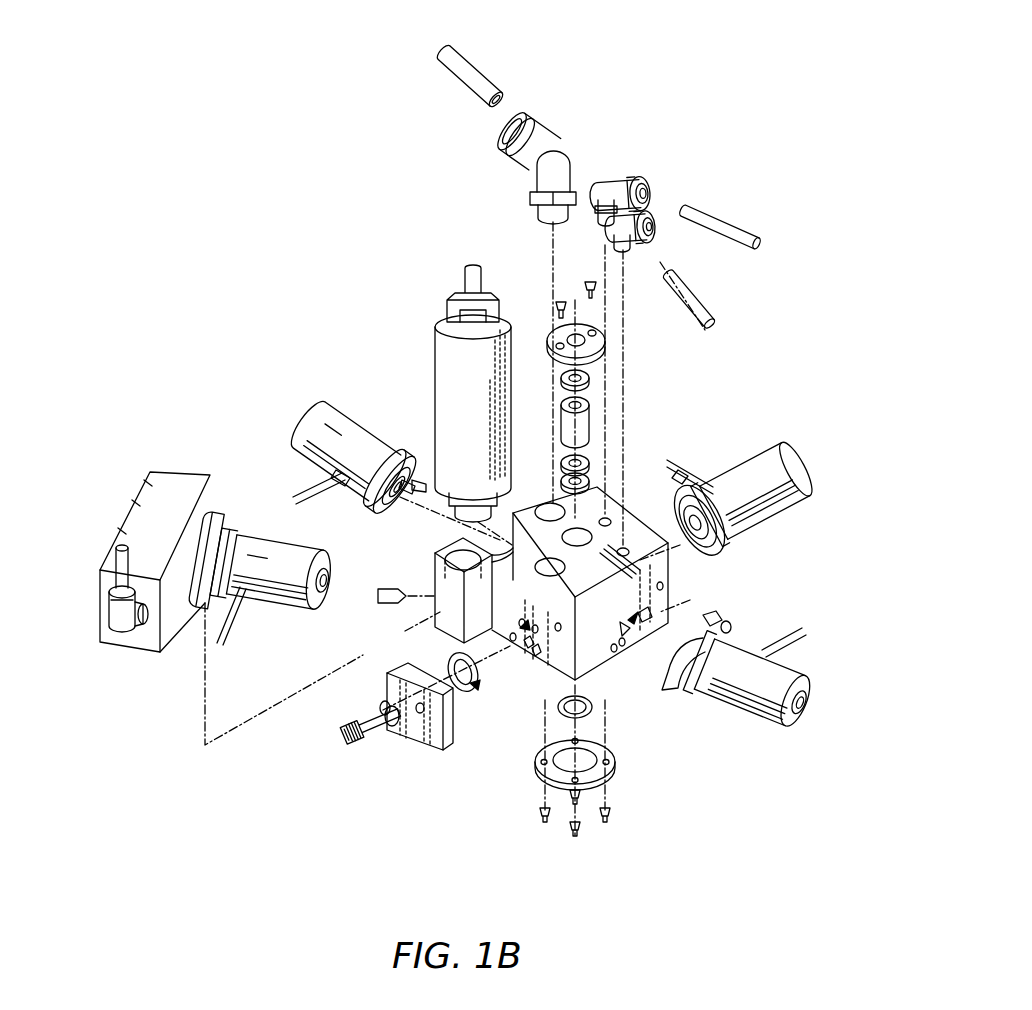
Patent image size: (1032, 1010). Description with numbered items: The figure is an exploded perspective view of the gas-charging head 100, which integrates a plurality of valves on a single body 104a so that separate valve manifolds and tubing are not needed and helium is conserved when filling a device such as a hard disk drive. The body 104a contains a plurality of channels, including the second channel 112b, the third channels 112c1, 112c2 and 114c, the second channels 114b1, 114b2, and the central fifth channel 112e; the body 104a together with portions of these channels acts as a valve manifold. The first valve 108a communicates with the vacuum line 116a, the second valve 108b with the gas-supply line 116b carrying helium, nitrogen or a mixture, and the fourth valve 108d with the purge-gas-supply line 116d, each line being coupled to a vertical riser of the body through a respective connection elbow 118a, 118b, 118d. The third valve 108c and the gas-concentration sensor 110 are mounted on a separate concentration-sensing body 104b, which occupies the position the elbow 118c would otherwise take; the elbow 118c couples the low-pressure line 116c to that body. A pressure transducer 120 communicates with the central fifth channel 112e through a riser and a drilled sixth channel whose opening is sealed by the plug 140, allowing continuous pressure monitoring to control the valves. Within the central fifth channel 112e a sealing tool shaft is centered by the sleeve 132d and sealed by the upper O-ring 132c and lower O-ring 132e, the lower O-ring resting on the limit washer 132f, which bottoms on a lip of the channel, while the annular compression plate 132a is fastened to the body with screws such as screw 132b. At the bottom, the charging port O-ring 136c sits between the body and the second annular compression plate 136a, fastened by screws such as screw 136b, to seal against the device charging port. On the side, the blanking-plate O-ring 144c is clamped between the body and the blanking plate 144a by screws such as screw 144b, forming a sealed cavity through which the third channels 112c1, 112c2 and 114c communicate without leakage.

The gas-charging head 100 is at (644, 46).
The body 104a is at (692, 556).
The concentration-sensing body 104b is at (165, 468).
The first valve 108a is at (317, 398).
The second valve 108b is at (787, 750).
The third valve 108c is at (260, 524).
The fourth valve 108d is at (787, 443).
The gas-concentration sensor 110 is at (156, 466).
The second channel 112b is at (716, 622).
The third channel 112c1 is at (525, 652).
The third channel 112c2 is at (512, 620).
The central fifth channel 112e is at (664, 584).
The second channel 114b1 is at (640, 655).
The second channel 114b2 is at (596, 710).
The third channel 114c is at (532, 655).
The vacuum line 116a is at (457, 80).
The gas-supply line 116b is at (692, 293).
The low-pressure line 116c is at (110, 553).
The purge-gas-supply line 116d is at (742, 229).
The connection elbow 118a is at (540, 122).
The connection elbow 118b is at (655, 216).
The connection elbow 118c is at (114, 614).
The connection elbow 118d is at (634, 186).
The pressure transducer 120 is at (438, 400).
The annular compression plate 132a is at (603, 346).
The screw 132b is at (558, 300).
The upper O-ring 132c is at (591, 379).
The sleeve 132d is at (591, 406).
The lower O-ring 132e is at (591, 463).
The limit washer 132f is at (591, 481).
The second annular compression plate 136a is at (612, 800).
The screw 136b is at (578, 838).
The charging port O-ring 136c is at (622, 769).
The plug 140 is at (380, 606).
The blanking plate 144a is at (437, 745).
The screw 144b is at (352, 745).
The blanking-plate O-ring 144c is at (478, 692).